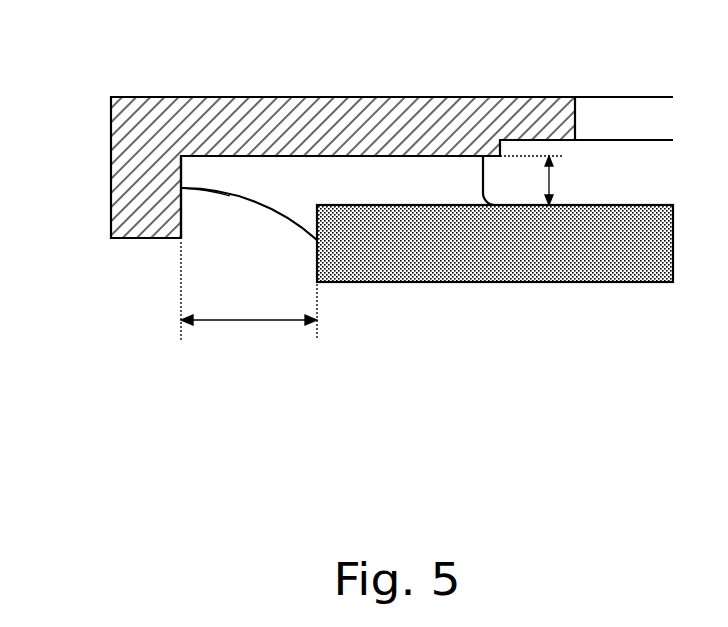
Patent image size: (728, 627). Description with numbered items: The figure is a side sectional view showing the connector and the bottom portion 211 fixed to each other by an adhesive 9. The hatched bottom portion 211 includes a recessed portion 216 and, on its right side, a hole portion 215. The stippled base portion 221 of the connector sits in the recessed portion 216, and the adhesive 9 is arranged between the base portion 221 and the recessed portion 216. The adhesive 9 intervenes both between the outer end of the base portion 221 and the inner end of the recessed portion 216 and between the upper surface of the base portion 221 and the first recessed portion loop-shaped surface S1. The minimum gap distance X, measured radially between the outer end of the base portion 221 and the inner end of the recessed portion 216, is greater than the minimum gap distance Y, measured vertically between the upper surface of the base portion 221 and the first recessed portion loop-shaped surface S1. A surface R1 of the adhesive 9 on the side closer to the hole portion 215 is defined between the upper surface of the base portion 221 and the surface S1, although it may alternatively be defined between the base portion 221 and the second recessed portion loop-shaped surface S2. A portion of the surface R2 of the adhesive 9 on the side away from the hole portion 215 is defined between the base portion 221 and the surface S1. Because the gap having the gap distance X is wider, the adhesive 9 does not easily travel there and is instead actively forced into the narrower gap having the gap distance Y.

The bottom portion 211 is at (175, 97).
The hole portion 215 is at (577, 117).
The recessed portion 216 is at (197, 217).
The adhesive 9 is at (287, 217).
The surface of the adhesive opposite the hole portion R2 is at (228, 193).
The first recessed portion loop-shaped surface S1 is at (315, 156).
The second recessed portion loop-shaped surface S2 is at (568, 140).
The surface of the adhesive closer to the hole portion R1 is at (487, 184).
The base portion 221 is at (610, 283).
The gap distance Y is at (562, 180).
The gap distance X is at (249, 297).